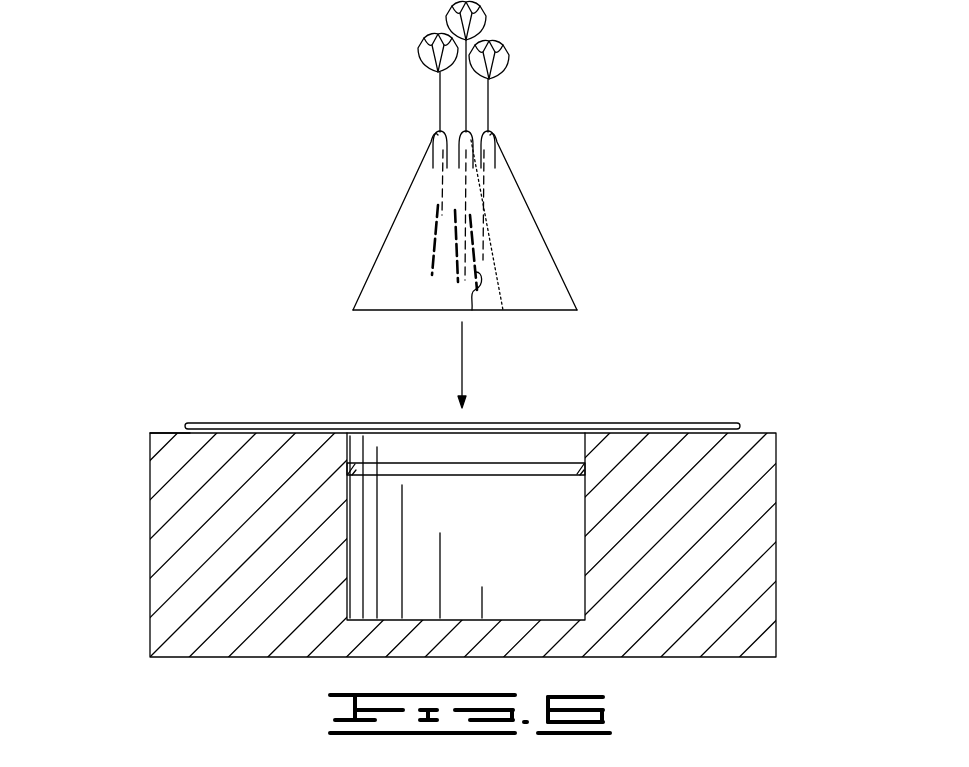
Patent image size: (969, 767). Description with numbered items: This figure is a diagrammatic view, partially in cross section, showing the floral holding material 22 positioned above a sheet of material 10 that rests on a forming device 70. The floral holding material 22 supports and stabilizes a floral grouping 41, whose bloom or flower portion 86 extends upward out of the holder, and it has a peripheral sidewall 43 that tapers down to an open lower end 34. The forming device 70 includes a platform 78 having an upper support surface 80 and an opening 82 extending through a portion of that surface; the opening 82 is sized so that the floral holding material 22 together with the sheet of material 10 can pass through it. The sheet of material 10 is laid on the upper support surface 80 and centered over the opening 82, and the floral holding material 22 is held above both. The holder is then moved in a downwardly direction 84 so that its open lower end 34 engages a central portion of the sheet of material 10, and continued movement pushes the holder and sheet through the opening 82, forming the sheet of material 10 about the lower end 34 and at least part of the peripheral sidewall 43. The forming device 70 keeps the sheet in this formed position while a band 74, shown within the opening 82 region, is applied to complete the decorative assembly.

The floral holding material 22 is at (560, 122).
The floral grouping 41 is at (528, 28).
The bloom or flower portion 86 is at (420, 50).
The peripheral sidewall 43 is at (534, 219).
The open lower end 34 is at (545, 312).
The downwardly direction 84 is at (466, 350).
The forming device 70 is at (104, 455).
The sheet of material 10 is at (292, 402).
The upper support surface 80 is at (170, 432).
The platform 78 is at (767, 428).
The opening 82 is at (583, 542).
The band 74 is at (565, 480).